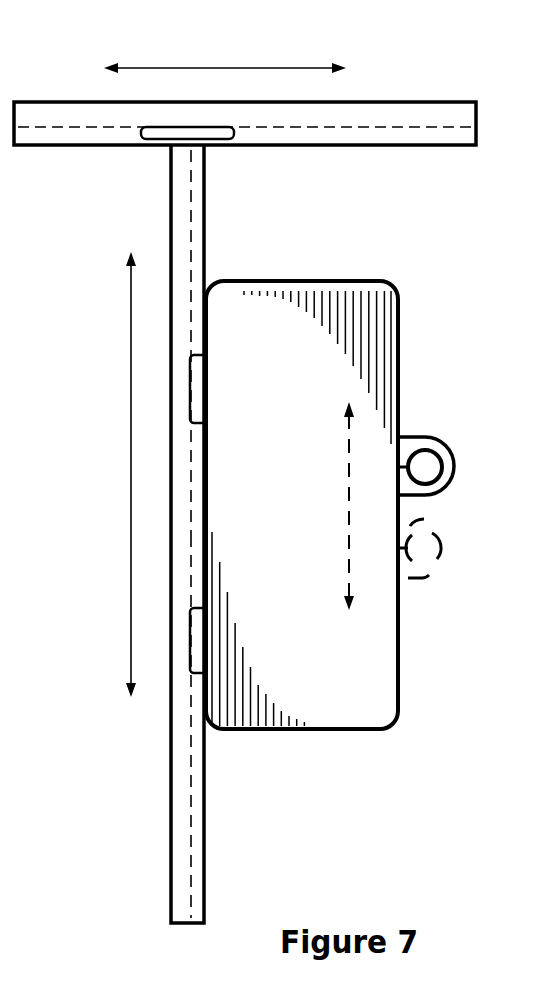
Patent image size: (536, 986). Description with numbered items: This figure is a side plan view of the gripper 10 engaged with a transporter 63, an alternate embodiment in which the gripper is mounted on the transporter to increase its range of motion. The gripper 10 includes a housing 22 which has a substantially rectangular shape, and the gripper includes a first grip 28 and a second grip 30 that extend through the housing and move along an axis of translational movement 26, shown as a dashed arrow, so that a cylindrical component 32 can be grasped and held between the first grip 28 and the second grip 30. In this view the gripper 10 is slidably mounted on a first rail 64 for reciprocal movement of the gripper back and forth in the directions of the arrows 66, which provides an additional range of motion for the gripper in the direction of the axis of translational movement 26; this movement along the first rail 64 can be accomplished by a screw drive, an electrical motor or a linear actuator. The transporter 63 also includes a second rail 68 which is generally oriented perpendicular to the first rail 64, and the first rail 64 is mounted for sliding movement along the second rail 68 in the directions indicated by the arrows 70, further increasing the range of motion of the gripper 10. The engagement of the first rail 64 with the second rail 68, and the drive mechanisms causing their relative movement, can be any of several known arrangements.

The gripper 10 is at (394, 316).
The housing 22 is at (385, 686).
The axis of translational movement 26 is at (348, 450).
The first grip 28 is at (440, 437).
The second grip 30 is at (432, 490).
The cylindrical component 32 is at (427, 468).
The transporter 63 is at (180, 162).
The first rail 64 is at (180, 868).
The arrows 66 is at (130, 420).
The second rail 68 is at (372, 104).
The arrows 70 is at (218, 68).